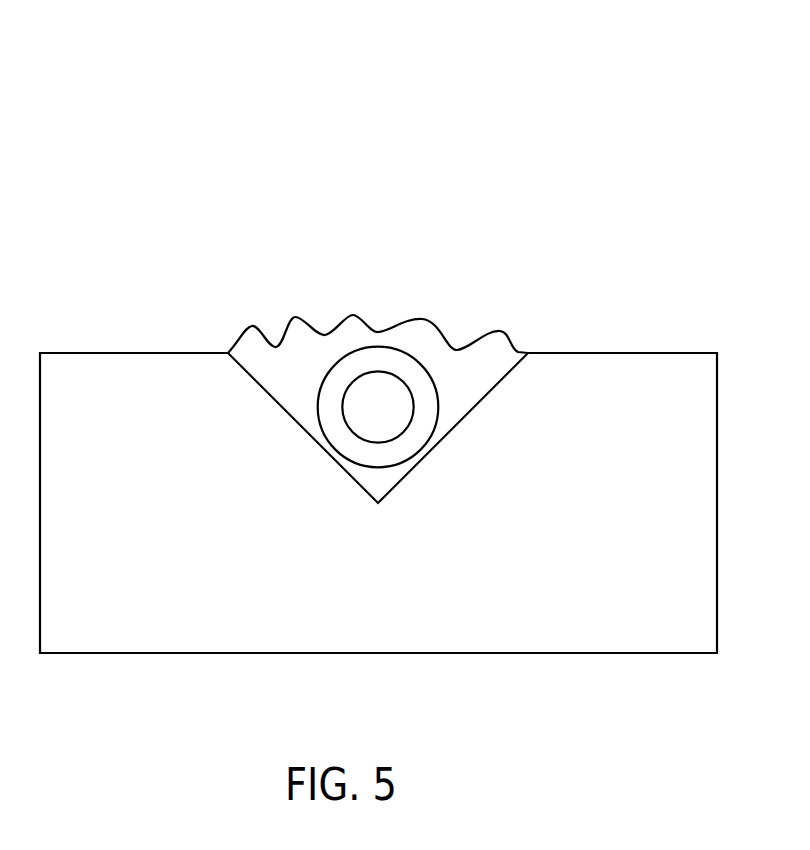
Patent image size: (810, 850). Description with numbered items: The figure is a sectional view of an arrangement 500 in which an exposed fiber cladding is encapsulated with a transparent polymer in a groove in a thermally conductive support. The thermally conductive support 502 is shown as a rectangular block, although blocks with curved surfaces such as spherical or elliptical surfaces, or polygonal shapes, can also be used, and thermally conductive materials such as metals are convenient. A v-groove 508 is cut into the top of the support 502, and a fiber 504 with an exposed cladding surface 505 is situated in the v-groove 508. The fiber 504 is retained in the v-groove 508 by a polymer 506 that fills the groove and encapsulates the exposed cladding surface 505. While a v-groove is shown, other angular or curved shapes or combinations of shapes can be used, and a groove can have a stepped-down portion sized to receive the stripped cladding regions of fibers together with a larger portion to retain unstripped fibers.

The fiber embedding arrangement 500 is at (140, 92).
The thermally conductive support 502 is at (642, 626).
The fiber 504 is at (333, 392).
The exposed cladding surface 505 is at (373, 347).
The polymer 506 is at (443, 363).
The v-groove 508 is at (317, 443).